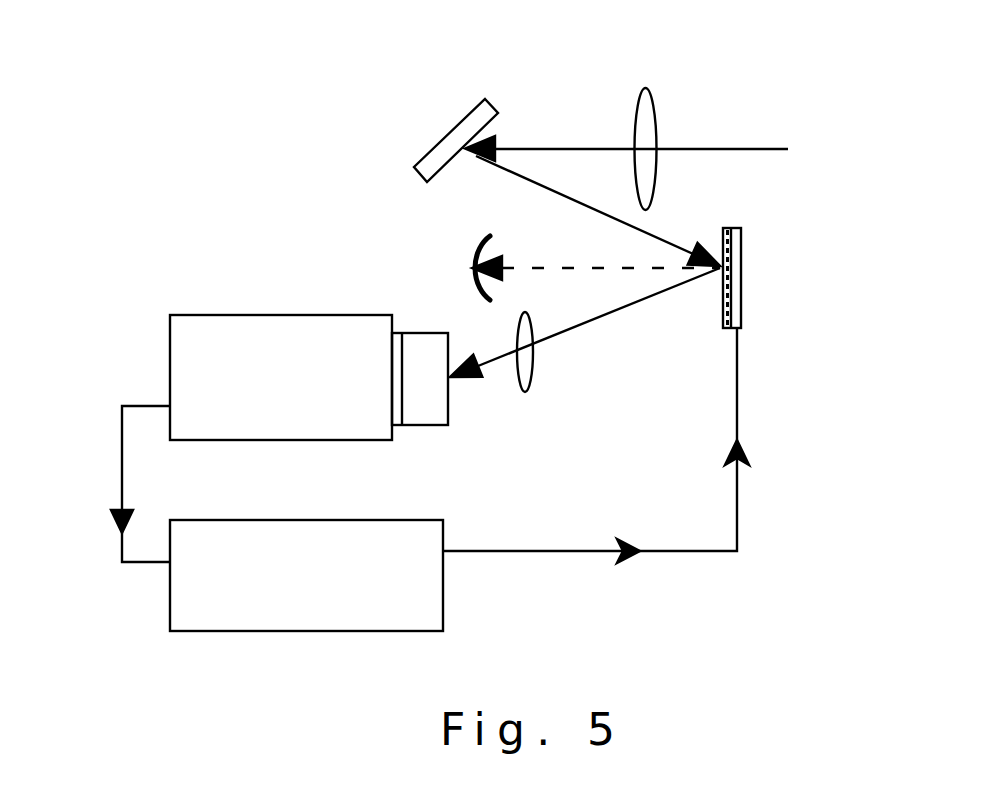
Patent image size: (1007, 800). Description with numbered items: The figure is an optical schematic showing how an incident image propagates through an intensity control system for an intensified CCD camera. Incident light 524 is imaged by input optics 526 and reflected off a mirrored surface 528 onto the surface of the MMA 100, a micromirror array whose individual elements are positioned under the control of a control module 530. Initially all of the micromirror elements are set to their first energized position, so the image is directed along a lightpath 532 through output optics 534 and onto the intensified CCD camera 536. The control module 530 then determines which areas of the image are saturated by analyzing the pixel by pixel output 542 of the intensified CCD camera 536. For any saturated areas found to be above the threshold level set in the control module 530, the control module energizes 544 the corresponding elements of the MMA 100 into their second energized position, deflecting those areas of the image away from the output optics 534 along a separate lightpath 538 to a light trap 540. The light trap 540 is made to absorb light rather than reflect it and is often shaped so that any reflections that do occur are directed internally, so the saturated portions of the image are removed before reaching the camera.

The MMA 100 is at (737, 310).
The incident light 524 is at (760, 150).
The input optics 526 is at (643, 117).
The mirrored surface 528 is at (430, 162).
The control module 530 is at (437, 613).
The lightpath 532 is at (625, 307).
The output optics 534 is at (524, 390).
The intensified CCD camera 536 is at (278, 333).
The lightpath 538 is at (547, 268).
The light trap 540 is at (447, 260).
The pixel by pixel output 542 is at (117, 515).
The energizing signal 544 is at (640, 552).